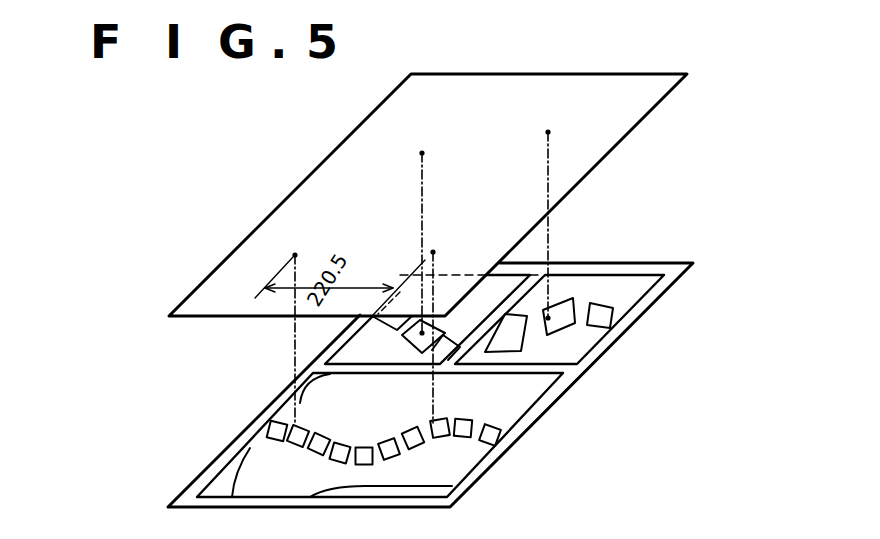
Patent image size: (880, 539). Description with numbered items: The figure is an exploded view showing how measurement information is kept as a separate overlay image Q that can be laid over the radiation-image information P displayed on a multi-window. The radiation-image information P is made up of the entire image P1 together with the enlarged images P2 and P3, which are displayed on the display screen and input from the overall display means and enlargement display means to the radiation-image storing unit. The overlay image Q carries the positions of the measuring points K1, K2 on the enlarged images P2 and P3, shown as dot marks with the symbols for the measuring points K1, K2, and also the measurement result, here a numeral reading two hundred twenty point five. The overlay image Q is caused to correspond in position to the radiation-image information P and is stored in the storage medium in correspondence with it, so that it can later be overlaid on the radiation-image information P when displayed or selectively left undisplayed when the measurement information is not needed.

The overlay image Q is at (678, 107).
The radiation-image information P is at (563, 413).
The entire image P1 is at (462, 468).
The enlarged image P2 is at (546, 265).
The enlarged image P3 is at (637, 283).
The measuring point K1 is at (353, 272).
The measuring point K2 is at (499, 268).